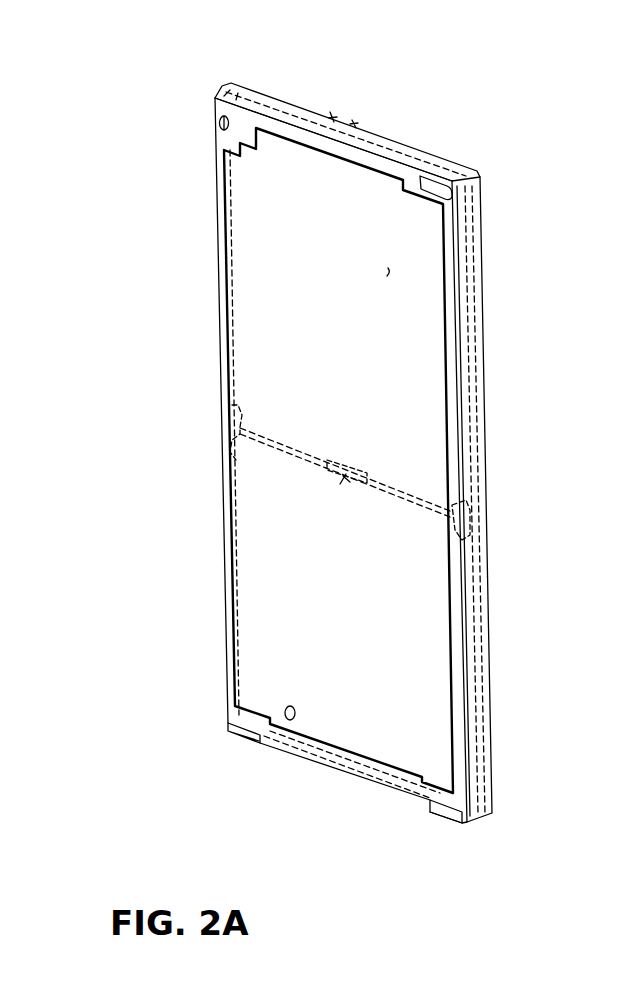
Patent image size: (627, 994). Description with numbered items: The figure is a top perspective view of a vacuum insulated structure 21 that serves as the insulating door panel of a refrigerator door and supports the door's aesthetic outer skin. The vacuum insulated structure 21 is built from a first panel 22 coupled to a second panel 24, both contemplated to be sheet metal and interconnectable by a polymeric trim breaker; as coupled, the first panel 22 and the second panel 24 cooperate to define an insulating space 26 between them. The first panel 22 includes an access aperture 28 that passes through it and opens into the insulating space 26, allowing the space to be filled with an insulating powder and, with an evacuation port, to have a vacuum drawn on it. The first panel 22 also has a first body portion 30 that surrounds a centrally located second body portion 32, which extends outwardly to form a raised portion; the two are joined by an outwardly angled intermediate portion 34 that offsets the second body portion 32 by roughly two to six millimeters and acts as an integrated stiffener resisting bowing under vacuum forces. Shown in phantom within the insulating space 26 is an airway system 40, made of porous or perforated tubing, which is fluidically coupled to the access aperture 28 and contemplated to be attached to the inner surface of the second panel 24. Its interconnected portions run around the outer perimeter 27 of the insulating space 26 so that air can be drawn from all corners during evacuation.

The vacuum insulated structure 21 is at (348, 426).
The first panel 22 is at (252, 123).
The second panel 24 is at (310, 100).
The insulating space 26 is at (390, 270).
The outer perimeter 27 is at (487, 338).
The access aperture 28 is at (219, 124).
The first body portion 30 is at (222, 178).
The second body portion 32 is at (262, 270).
The intermediate portion 34 is at (380, 172).
The airway system 40 is at (250, 342).